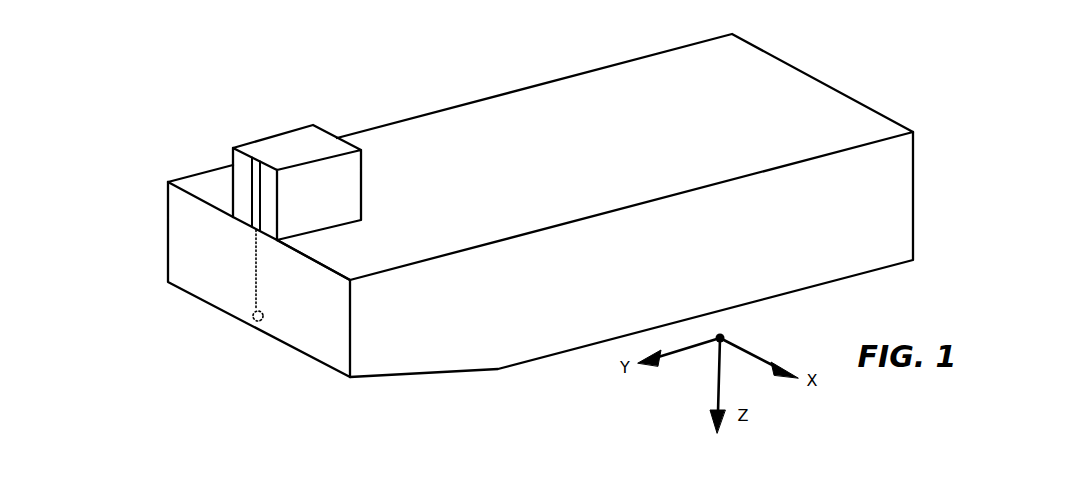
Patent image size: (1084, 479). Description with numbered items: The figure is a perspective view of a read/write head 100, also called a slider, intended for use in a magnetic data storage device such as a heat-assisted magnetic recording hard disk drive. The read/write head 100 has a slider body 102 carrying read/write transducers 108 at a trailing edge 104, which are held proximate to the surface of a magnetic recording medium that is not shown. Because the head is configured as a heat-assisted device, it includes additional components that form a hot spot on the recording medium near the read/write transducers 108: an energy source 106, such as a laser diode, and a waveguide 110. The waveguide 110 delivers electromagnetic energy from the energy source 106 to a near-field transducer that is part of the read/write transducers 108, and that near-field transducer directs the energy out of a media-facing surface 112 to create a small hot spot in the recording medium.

The read/write head 100 is at (526, 239).
The slider body 102 is at (483, 108).
The trailing edge 104 is at (168, 257).
The energy source 106 is at (257, 143).
The read/write transducers 108 is at (252, 338).
The waveguide 110 is at (257, 273).
The media-facing surface 112 is at (337, 377).